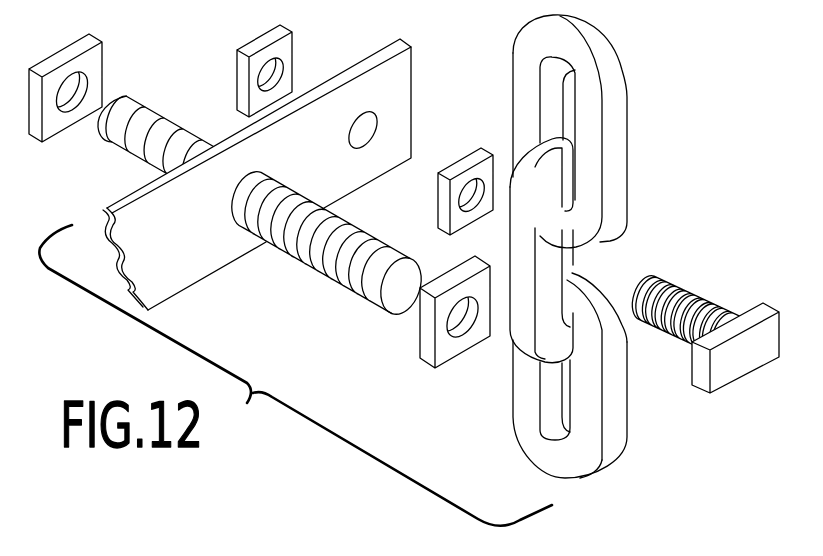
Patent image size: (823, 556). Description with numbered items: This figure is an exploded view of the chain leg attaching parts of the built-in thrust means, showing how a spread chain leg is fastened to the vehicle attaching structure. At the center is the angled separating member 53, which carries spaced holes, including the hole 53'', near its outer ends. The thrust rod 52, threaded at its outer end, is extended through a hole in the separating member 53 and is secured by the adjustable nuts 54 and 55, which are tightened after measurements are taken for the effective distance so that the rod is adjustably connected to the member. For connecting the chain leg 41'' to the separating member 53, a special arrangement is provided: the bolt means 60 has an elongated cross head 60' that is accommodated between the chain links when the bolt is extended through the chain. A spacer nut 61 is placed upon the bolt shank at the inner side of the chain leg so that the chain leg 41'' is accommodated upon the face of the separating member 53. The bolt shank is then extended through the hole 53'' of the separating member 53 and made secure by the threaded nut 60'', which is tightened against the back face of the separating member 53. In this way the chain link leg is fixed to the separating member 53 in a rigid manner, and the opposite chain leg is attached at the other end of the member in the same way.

The separating member 53 is at (257, 165).
The hole in separating member 53'' is at (414, 98).
The thrust rod 52 is at (192, 130).
The adjustable nut 54 is at (97, 33).
The threaded nut 60'' is at (239, 63).
The spacer nut 61 is at (488, 148).
The adjustable nut 55 is at (433, 368).
The chain leg 41'' is at (631, 246).
The bolt means 60 is at (689, 291).
The elongated cross head 60' is at (735, 373).